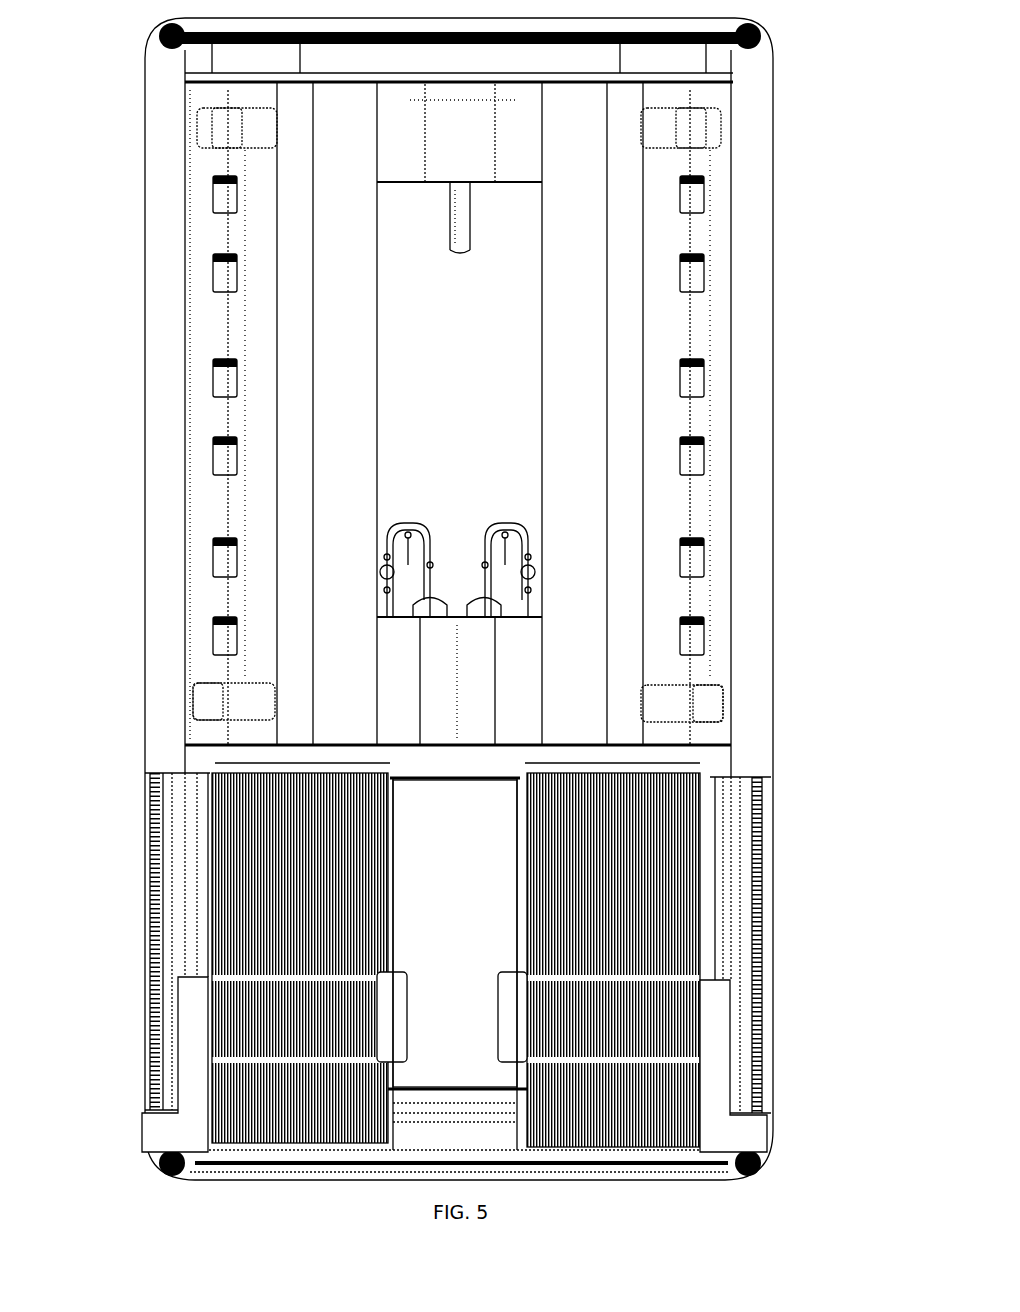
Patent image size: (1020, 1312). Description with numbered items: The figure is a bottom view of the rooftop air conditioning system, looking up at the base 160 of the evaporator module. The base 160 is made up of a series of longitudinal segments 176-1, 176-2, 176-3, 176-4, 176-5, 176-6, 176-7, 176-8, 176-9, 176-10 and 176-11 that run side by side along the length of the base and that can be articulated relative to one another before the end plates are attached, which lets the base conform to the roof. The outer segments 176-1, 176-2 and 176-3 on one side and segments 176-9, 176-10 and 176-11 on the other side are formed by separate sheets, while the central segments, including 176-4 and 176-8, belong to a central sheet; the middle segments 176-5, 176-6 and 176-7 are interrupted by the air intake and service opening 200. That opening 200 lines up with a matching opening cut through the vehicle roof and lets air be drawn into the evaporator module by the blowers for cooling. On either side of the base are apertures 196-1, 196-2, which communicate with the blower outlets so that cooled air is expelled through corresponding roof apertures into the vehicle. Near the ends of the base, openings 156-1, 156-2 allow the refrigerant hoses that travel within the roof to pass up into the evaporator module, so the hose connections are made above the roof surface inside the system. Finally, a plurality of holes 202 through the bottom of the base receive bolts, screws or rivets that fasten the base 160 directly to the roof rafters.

The base 160 is at (190, 232).
The holes 202 is at (185, 418).
The longitudinal segment 176-1 is at (200, 163).
The longitudinal segment 176-2 is at (240, 308).
The longitudinal segment 176-3 is at (283, 514).
The longitudinal segment 176-4 is at (375, 252).
The longitudinal segment 176-5 is at (410, 163).
The longitudinal segment 176-6 is at (488, 168).
The longitudinal segment 176-7 is at (523, 150).
The longitudinal segment 176-8 is at (600, 330).
The longitudinal segment 176-9 is at (640, 335).
The longitudinal segment 176-10 is at (663, 238).
The longitudinal segment 176-11 is at (718, 155).
The aperture 196-1 is at (700, 375).
The aperture 196-2 is at (213, 378).
The opening 156-1 is at (695, 707).
The opening 156-2 is at (207, 700).
The air intake and service opening 200 is at (485, 396).